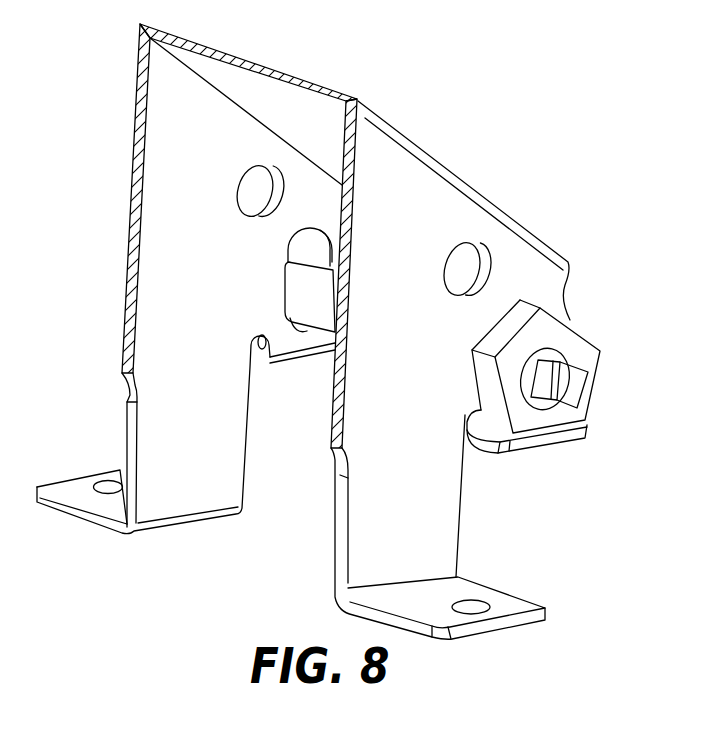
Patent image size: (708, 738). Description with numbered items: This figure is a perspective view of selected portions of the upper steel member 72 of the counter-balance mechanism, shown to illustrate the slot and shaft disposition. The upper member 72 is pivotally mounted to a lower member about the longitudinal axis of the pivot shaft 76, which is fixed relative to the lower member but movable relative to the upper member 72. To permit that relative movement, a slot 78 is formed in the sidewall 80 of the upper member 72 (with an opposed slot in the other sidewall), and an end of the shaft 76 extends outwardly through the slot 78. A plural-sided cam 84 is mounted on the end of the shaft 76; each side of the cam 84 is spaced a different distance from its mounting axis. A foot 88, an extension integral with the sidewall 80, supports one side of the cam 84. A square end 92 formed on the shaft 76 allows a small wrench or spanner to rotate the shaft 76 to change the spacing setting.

The upper steel member 72 is at (453, 171).
The pivot shaft 76 is at (303, 297).
The slot 78 is at (296, 252).
The sidewall 80 is at (368, 410).
The plural-sided cam 84 is at (588, 330).
The foot 88 is at (560, 443).
The square end 92 is at (576, 390).